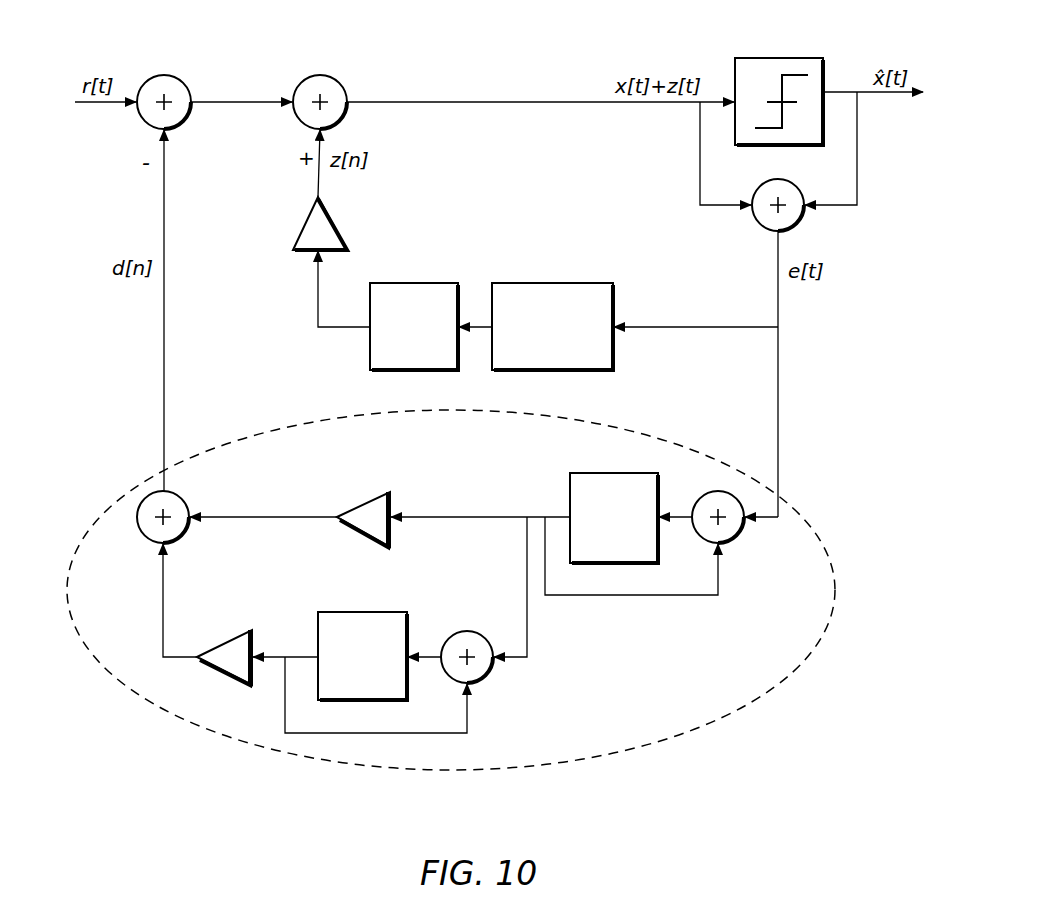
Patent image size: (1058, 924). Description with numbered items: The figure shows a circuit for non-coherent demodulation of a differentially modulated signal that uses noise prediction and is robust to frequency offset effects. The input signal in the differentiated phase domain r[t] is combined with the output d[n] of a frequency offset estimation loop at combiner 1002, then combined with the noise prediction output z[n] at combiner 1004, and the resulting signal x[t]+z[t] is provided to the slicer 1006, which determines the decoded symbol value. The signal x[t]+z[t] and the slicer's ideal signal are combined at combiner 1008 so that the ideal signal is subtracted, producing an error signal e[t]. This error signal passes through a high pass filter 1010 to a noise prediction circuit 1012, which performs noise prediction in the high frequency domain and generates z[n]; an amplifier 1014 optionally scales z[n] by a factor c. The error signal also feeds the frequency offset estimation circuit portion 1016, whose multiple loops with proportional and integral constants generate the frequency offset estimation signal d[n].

The combiner 1002 is at (163, 74).
The combiner 1004 is at (319, 74).
The slicer 1006 is at (781, 57).
The combiner 1008 is at (757, 221).
The high pass filter 1010 is at (549, 283).
The noise prediction circuit 1012 is at (412, 283).
The amplifier 1014 is at (333, 228).
The frequency offset estimation circuit portion 1016 is at (675, 440).